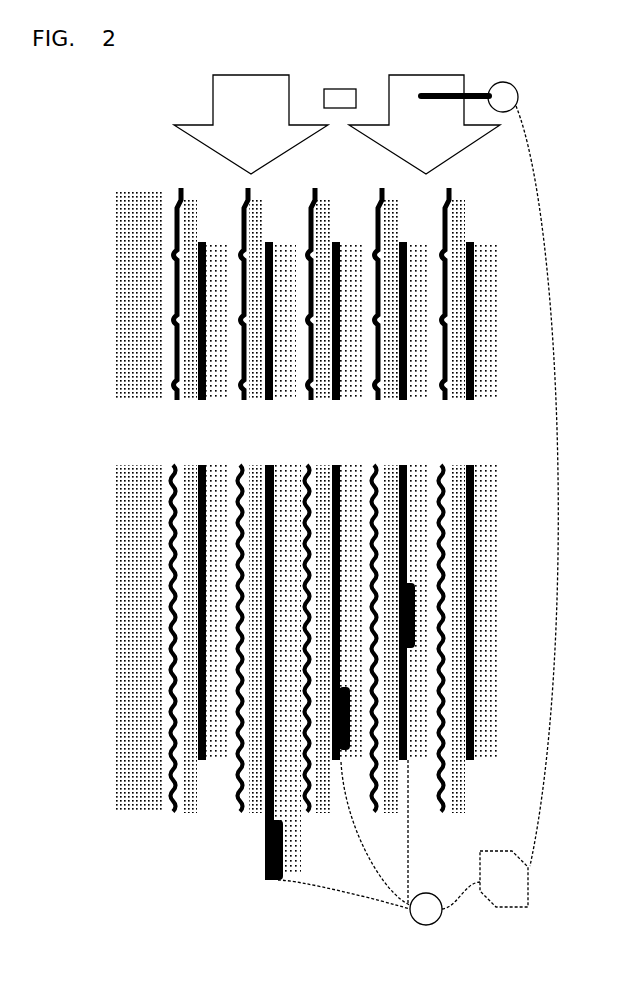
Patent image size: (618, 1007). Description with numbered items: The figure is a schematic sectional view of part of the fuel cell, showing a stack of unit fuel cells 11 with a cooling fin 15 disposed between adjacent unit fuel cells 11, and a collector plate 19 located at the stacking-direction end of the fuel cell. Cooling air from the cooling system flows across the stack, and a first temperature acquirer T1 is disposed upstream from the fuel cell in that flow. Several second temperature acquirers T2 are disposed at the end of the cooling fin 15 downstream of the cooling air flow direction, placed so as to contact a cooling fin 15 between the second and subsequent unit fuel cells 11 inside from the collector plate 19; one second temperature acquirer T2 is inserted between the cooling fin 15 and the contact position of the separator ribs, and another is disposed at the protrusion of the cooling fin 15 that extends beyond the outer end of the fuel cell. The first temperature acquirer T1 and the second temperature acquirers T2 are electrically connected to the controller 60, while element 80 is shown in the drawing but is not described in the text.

The unit fuel cell 11 is at (298, 181).
The cooling fin 15 is at (342, 240).
The collector plate 19 is at (118, 748).
The controller 60 is at (513, 850).
The controller 80 is at (340, 98).
The first temperature acquirer T1 is at (489, 474).
The second temperature acquirer T2 is at (379, 842).